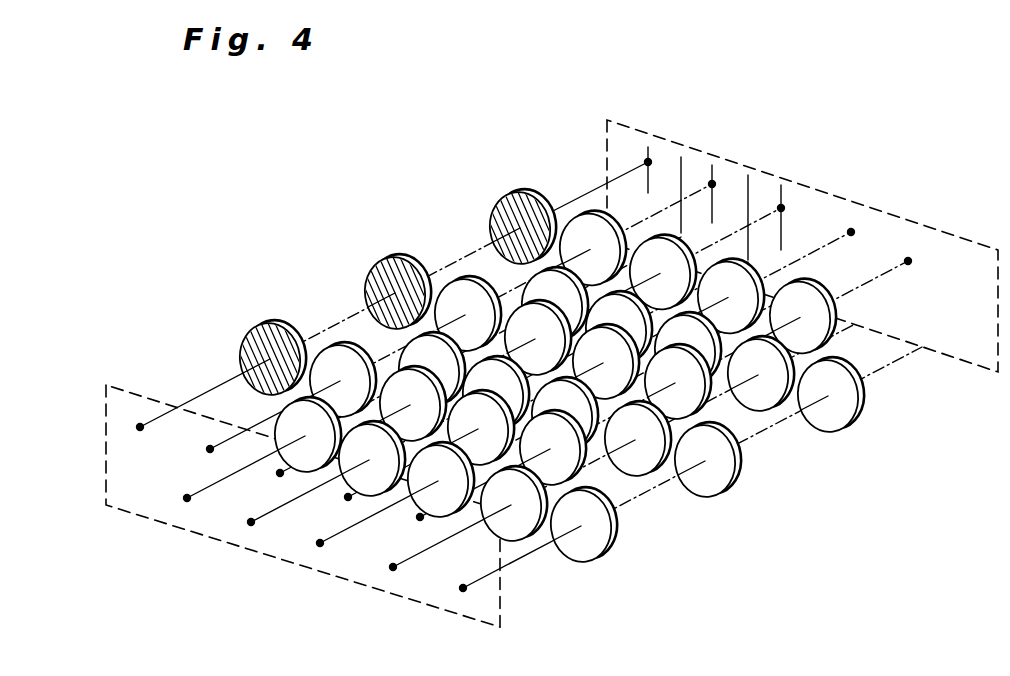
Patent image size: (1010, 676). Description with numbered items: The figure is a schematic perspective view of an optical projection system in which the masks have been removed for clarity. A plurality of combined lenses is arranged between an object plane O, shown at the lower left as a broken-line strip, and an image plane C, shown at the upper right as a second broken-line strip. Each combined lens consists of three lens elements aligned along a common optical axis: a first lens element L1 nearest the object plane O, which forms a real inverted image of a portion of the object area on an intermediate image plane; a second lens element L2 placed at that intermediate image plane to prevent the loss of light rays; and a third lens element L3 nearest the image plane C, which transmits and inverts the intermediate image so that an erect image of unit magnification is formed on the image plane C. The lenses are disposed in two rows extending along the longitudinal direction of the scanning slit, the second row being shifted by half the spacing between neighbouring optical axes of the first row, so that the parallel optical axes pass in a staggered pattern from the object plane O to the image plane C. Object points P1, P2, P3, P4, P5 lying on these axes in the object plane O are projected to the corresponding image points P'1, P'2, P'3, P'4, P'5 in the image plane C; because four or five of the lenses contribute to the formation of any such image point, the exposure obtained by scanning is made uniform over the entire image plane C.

The object plane O is at (118, 398).
The image plane C is at (628, 135).
The first lens element L1 is at (268, 322).
The second lens element L2 is at (395, 257).
The third lens element L3 is at (518, 192).
The object point P1 is at (140, 427).
The object point P2 is at (187, 498).
The object point P3 is at (210, 449).
The object point P4 is at (251, 522).
The object point P5 is at (280, 473).
The image point P'1 is at (673, 124).
The image point P'2 is at (714, 150).
The image point P'3 is at (751, 151).
The image point P'4 is at (793, 176).
The image point P'5 is at (831, 178).